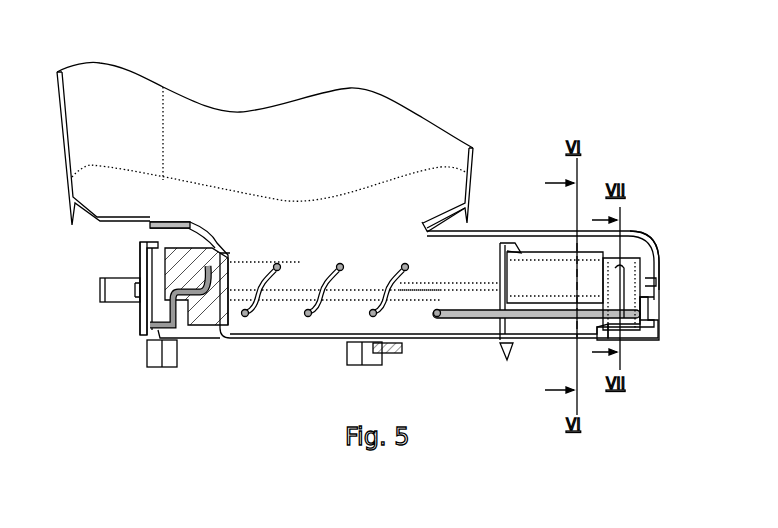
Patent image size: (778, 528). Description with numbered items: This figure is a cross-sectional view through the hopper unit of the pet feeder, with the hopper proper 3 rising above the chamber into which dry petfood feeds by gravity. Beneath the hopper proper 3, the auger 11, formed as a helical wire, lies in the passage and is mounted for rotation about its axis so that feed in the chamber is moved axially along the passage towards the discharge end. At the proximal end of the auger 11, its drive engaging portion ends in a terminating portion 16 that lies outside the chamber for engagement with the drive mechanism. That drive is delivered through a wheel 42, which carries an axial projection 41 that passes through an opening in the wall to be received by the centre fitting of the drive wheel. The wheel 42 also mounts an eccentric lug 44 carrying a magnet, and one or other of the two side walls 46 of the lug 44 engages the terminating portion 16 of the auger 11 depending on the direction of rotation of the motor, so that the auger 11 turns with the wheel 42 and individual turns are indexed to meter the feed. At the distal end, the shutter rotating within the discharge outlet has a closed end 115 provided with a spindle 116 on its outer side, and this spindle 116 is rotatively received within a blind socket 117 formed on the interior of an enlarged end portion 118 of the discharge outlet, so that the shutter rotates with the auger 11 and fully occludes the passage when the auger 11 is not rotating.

The hopper proper 3 is at (423, 118).
The auger 11 is at (383, 307).
The terminating portion 16 is at (172, 332).
The axial projection 41 is at (105, 305).
The wheel 42 is at (140, 262).
The eccentric lug 44 is at (150, 340).
The side walls 46 is at (158, 317).
The closed end 115 is at (630, 258).
The spindle 116 is at (647, 292).
The blind socket 117 is at (656, 283).
The enlarged end portion 118 is at (652, 273).